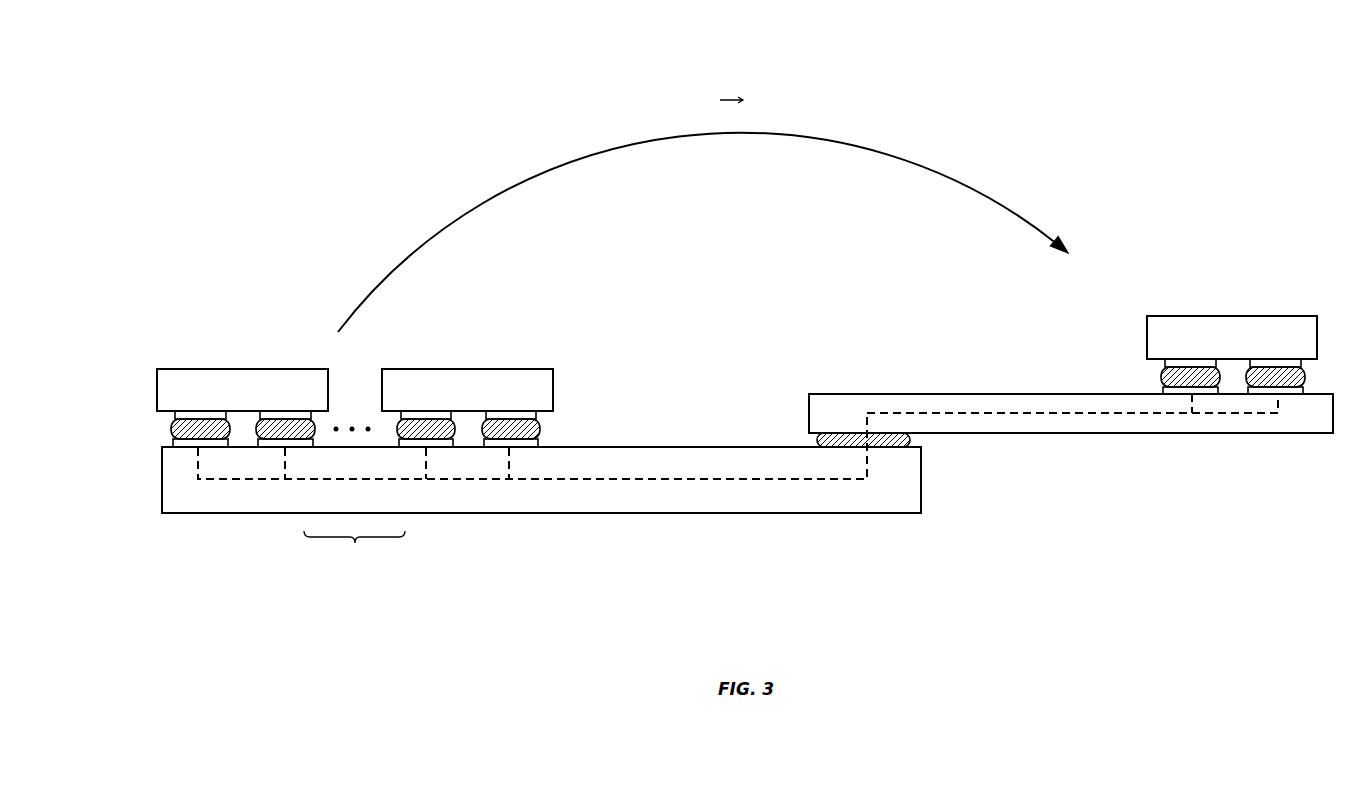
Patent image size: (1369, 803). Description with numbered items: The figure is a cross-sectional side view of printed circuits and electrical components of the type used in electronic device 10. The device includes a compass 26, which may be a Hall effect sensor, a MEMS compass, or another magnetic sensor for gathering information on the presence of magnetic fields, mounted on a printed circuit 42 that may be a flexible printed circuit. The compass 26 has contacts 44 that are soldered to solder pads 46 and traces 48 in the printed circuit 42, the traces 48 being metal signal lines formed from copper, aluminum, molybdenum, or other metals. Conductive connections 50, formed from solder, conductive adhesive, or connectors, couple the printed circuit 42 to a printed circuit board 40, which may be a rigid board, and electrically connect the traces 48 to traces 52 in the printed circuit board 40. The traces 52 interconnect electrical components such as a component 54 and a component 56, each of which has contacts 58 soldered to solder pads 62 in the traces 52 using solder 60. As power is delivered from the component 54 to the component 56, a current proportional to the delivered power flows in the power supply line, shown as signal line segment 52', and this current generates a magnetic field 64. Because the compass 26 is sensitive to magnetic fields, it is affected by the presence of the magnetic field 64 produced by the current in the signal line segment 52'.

The electronic device 10 is at (1152, 83).
The compass 26 is at (1196, 316).
The printed circuit board 40 is at (628, 514).
The printed circuit 42 is at (1083, 434).
The contacts 44 is at (1165, 363).
The solder pads 46 is at (1163, 377).
The traces 48 is at (1228, 414).
The conductive connections 50 is at (912, 442).
The traces 52 is at (532, 493).
The signal line segment 52' is at (354, 548).
The component 54 is at (235, 381).
The component 56 is at (526, 378).
The contacts 58 is at (312, 415).
The solder 60 is at (314, 430).
The solder pads 62 is at (314, 445).
The magnetic field 64 is at (857, 143).